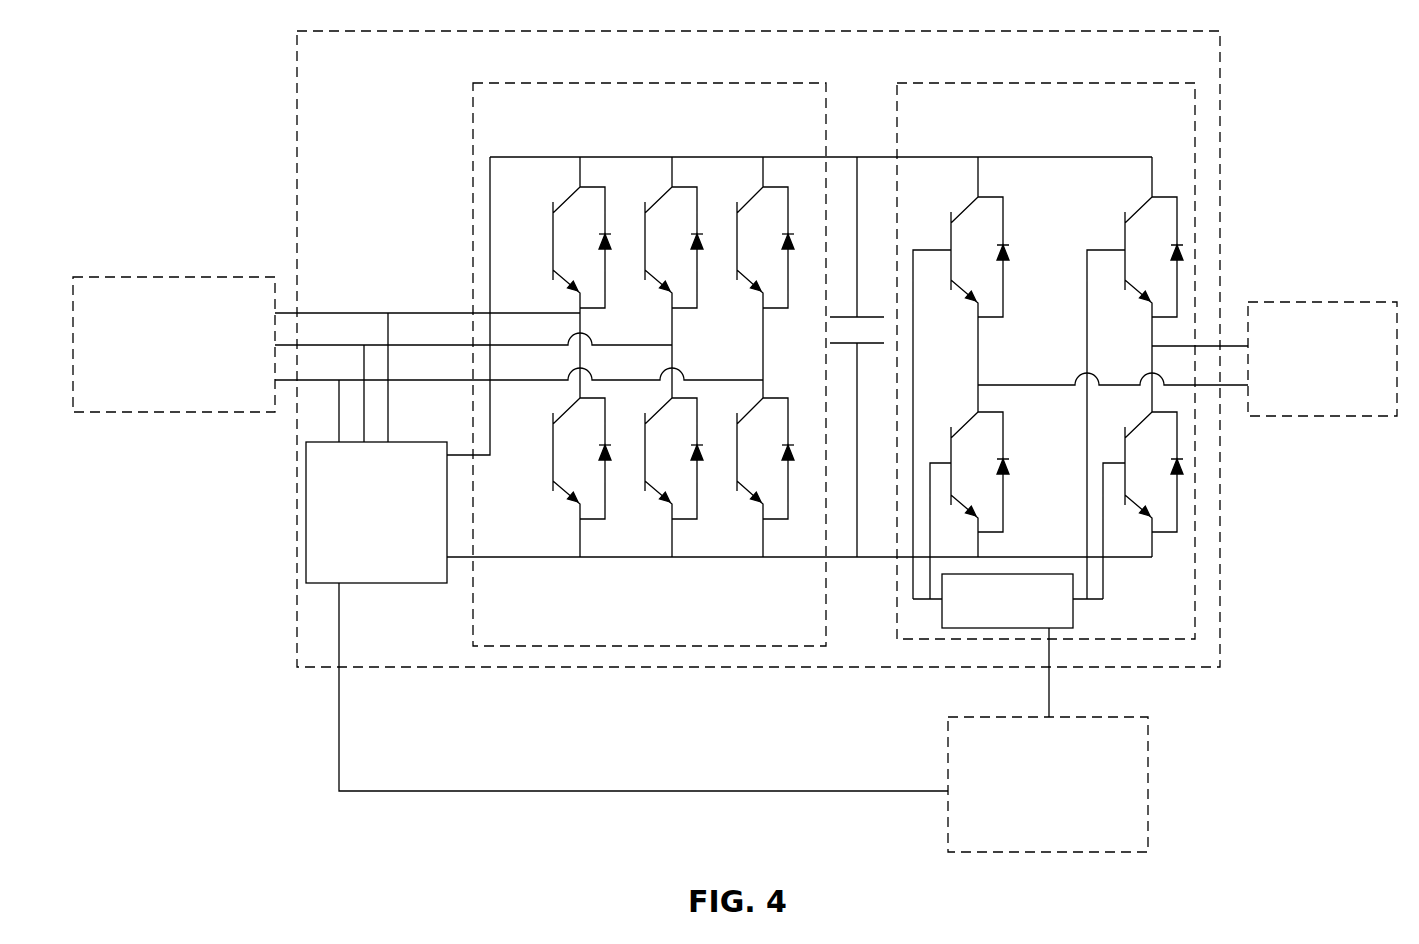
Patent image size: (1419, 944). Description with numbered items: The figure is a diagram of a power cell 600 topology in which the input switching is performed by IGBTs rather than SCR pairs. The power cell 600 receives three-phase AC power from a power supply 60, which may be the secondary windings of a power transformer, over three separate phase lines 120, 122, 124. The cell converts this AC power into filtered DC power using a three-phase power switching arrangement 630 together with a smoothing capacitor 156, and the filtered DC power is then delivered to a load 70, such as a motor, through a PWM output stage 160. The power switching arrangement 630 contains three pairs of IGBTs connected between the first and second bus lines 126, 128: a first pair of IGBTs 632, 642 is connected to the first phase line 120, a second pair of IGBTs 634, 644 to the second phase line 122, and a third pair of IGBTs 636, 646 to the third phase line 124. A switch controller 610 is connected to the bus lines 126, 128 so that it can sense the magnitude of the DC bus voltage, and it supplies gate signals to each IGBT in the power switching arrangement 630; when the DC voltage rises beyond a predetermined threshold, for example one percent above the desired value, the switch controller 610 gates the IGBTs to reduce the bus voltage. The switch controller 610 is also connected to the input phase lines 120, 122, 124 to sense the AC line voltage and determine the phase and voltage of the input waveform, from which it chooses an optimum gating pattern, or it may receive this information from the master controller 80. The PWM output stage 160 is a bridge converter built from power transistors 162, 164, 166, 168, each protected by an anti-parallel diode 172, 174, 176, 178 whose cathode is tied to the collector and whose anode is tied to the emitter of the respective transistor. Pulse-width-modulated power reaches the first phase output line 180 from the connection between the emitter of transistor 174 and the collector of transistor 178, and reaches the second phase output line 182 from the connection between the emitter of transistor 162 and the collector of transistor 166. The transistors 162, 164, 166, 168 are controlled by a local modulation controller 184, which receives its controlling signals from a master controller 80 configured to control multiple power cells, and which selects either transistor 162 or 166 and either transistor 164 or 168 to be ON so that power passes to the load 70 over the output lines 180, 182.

The power cell 600 is at (1220, 52).
The power switching arrangement 630 is at (636, 83).
The PWM output stage 160 is at (1046, 83).
The power supply 60 is at (125, 277).
The load 70 is at (1340, 302).
The master controller 80 is at (1148, 793).
The switch controller 610 is at (398, 583).
The local modulation controller 184 is at (1073, 620).
The first phase line 120 is at (316, 313).
The second phase line 122 is at (327, 345).
The third phase line 124 is at (348, 380).
The first bus line 126 is at (841, 157).
The second bus line 128 is at (850, 560).
The smoothing capacitor 156 is at (866, 345).
The IGBT 632 is at (553, 228).
The IGBT 634 is at (645, 228).
The IGBT 636 is at (737, 228).
The IGBT 642 is at (553, 470).
The IGBT 644 is at (645, 470).
The IGBT 646 is at (737, 470).
The transistor 162 is at (952, 275).
The transistor 164 is at (1126, 275).
The transistor 166 is at (952, 441).
The transistor 168 is at (1126, 451).
The anti-parallel diode 172 is at (1012, 257).
The anti-parallel diode 174 is at (1187, 257).
The anti-parallel diode 176 is at (1012, 468).
The anti-parallel diode 178 is at (1188, 468).
The first phase output line 180 is at (1233, 346).
The second phase output line 182 is at (1237, 386).